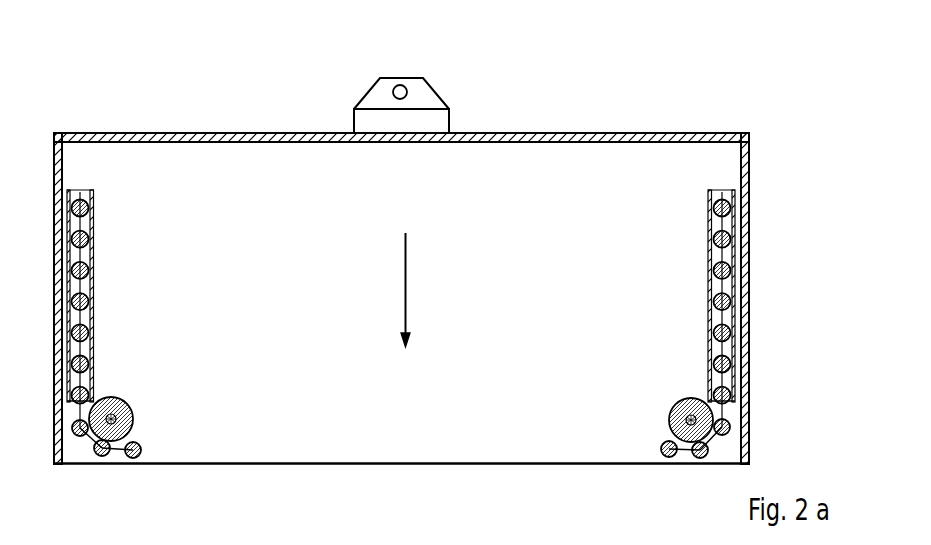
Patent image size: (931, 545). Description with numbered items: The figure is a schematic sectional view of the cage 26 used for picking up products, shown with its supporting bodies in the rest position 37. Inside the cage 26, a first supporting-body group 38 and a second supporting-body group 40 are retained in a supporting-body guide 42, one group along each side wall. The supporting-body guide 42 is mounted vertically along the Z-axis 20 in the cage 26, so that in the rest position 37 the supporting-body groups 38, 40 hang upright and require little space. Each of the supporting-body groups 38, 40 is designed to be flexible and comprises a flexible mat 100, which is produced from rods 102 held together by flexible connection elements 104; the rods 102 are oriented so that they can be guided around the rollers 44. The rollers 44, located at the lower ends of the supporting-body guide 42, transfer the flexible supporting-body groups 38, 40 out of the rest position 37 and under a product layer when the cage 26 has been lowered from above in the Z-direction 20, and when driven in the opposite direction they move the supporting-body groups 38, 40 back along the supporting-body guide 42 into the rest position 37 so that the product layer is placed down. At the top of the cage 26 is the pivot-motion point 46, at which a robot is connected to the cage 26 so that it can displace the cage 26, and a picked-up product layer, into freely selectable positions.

The rest position 37 is at (391, 235).
The cage 26 is at (600, 124).
The pivot-motion point 46 is at (401, 85).
The Z-axis 20 is at (406, 282).
The first supporting-body group 38 is at (180, 254).
The second supporting-body group 40 is at (628, 254).
The supporting-body guide 42 is at (92, 202).
The flexible connection elements 104 is at (90, 283).
The flexible mats 100 is at (92, 318).
The rods 102 is at (86, 239).
The rollers 44 is at (130, 406).